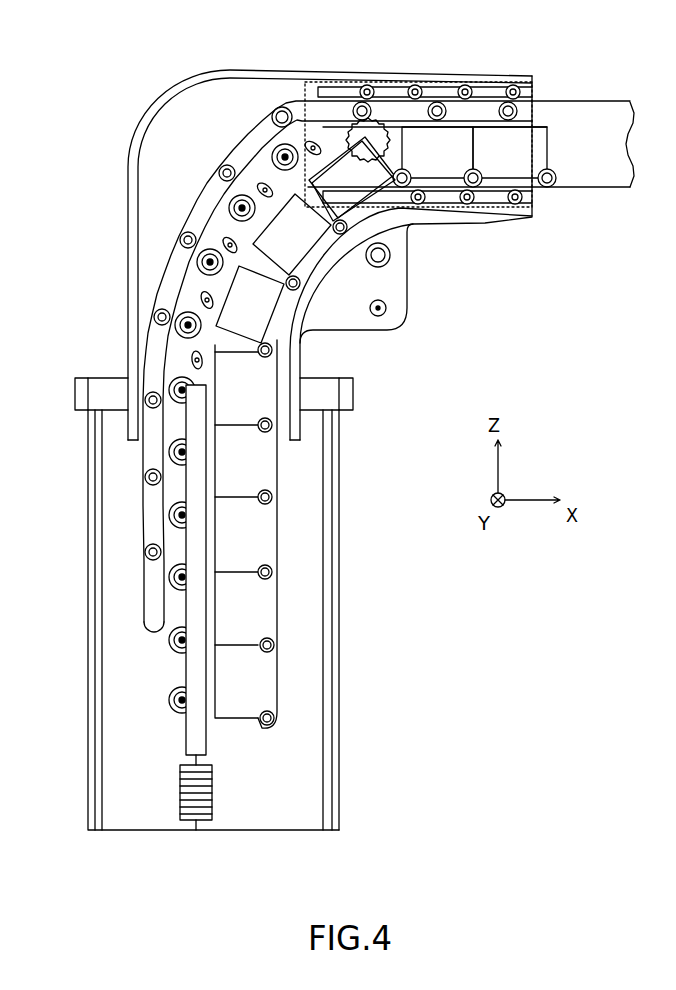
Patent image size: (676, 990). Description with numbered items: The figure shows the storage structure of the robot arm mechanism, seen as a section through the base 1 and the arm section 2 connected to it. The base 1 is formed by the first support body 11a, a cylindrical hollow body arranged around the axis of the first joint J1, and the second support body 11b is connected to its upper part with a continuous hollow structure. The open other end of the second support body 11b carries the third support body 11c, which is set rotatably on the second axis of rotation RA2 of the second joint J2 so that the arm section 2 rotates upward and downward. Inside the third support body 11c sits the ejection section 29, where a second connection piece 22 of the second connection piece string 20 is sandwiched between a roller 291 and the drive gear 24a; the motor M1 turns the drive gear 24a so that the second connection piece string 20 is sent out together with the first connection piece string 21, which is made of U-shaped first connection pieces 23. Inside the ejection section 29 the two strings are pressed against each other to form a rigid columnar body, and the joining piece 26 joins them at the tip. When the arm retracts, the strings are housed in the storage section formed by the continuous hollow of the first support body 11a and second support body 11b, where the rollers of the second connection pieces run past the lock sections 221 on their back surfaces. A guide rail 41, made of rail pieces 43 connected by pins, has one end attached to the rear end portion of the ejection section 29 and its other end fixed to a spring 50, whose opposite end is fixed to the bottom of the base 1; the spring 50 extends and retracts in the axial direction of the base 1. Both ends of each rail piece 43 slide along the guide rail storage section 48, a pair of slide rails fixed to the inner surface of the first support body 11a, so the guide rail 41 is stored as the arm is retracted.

The base 1 is at (82, 738).
The arm section 2 is at (584, 100).
The first support body 11a is at (332, 768).
The second support body 11b is at (128, 197).
The third support body 11c is at (450, 72).
The second connection piece string 20 is at (140, 580).
The first connection piece string 21 is at (281, 580).
The second connection piece 22 is at (143, 543).
The first connection piece 23 is at (277, 532).
The drive gear 24a is at (352, 135).
The joining piece 26 is at (613, 188).
The ejection section 29 is at (413, 76).
The roller 291 is at (365, 86).
The guide rail 41 is at (163, 663).
The rail piece 43 is at (168, 700).
The guide rail storage section 48 is at (197, 465).
The spring 50 is at (172, 803).
The lock section 221 is at (186, 275).
The first joint J1 is at (82, 377).
The second joint J2 is at (383, 333).
The motor M1 is at (390, 255).
The second axis of rotation RA2 is at (388, 310).